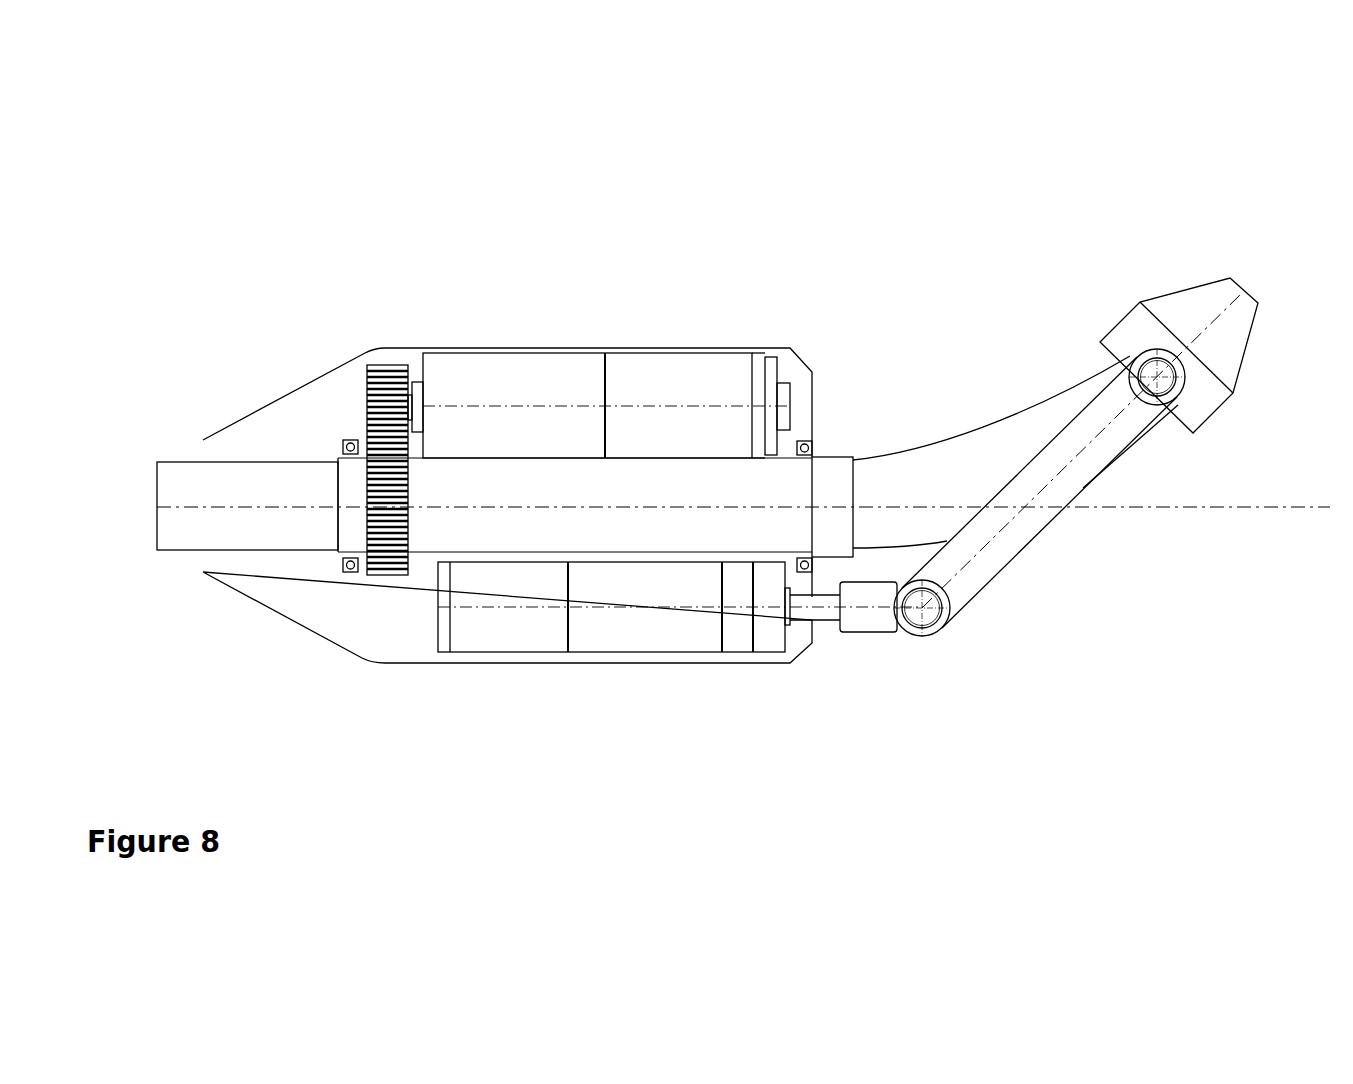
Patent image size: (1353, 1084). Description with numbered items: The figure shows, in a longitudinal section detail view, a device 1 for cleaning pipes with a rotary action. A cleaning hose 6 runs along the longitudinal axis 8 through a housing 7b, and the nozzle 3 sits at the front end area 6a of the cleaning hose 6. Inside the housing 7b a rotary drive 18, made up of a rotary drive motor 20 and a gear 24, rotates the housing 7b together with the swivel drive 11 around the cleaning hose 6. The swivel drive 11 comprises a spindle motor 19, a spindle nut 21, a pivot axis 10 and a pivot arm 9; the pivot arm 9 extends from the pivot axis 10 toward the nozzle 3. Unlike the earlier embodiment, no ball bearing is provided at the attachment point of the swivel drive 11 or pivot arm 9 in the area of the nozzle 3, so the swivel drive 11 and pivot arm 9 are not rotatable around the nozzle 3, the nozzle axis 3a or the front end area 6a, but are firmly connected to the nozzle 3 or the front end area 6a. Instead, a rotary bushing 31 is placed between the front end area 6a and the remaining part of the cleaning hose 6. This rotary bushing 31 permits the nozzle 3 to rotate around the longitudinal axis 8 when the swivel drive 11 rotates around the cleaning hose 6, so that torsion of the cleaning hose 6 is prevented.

The device for cleaning pipes 1 is at (280, 167).
The nozzle 3 is at (1197, 285).
The nozzle axis 3a is at (1205, 322).
The cleaning hose 6 is at (248, 505).
The front end area of cleaning hose 6a is at (965, 470).
The housing 7b is at (368, 610).
The longitudinal axis 8 is at (1303, 505).
The pivot arm 9 is at (1067, 482).
The pivot axis 10 is at (922, 608).
The swivel drive 11 is at (963, 818).
The rotary drive 18 is at (685, 183).
The spindle motor 19 is at (643, 635).
The rotary drive motor 20 is at (577, 383).
The spindle nut 21 is at (858, 623).
The gear 24 is at (386, 381).
The rotary bushing 31 is at (826, 465).